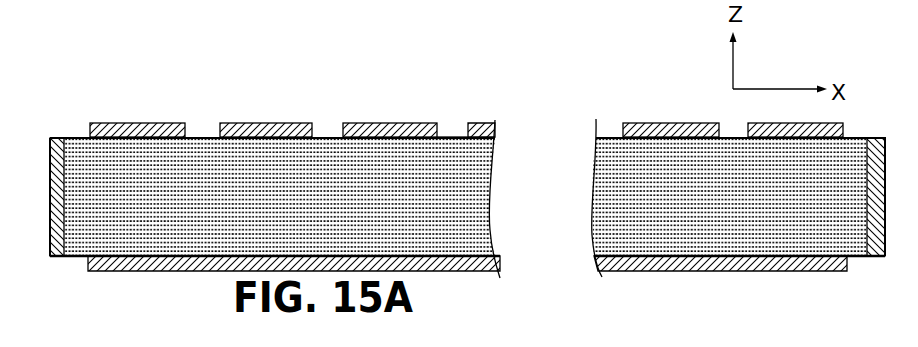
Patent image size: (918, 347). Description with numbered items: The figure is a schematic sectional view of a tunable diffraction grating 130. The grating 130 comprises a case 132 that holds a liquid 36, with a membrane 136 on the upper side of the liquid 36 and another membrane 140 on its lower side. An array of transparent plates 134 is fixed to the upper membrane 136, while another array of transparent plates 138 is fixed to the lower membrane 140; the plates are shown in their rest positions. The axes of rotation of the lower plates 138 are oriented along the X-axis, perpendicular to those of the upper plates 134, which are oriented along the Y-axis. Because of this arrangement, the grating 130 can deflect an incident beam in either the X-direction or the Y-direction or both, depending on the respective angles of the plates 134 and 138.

The tunable diffraction grating 130 is at (110, 80).
The case 132 is at (60, 218).
The transparent plates 134 is at (398, 122).
The membrane 136 is at (456, 136).
The liquid 36 is at (639, 206).
The transparent plates 138 is at (218, 264).
The membrane 140 is at (80, 256).